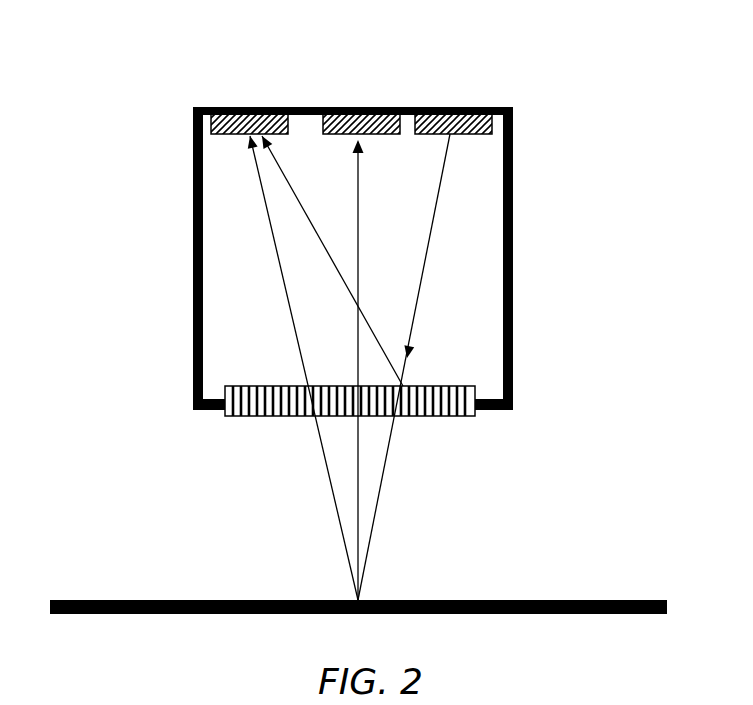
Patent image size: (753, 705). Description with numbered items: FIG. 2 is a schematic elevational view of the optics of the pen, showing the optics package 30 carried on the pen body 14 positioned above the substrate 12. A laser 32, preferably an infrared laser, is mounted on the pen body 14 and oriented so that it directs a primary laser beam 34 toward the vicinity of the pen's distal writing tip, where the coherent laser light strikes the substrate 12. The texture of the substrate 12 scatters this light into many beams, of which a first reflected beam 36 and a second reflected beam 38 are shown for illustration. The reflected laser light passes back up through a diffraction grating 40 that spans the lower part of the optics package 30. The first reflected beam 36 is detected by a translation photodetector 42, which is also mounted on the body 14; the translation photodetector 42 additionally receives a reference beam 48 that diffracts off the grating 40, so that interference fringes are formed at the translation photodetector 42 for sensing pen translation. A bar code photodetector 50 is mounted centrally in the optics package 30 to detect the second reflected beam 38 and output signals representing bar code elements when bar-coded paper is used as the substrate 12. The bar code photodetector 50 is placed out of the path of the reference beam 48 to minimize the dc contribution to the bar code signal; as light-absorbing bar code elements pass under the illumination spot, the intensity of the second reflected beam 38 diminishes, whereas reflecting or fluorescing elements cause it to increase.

The substrate 12 is at (415, 600).
The pen body 14 is at (513, 148).
The optics package 30 is at (368, 304).
The laser 32 is at (450, 107).
The primary laser beam 34 is at (425, 277).
The first reflected beam 36 is at (280, 284).
The second reflected beam 38 is at (357, 360).
The diffraction grating 40 is at (455, 420).
The translation photodetector 42 is at (252, 107).
The reference beam 48 is at (313, 237).
The bar code photodetector 50 is at (353, 107).